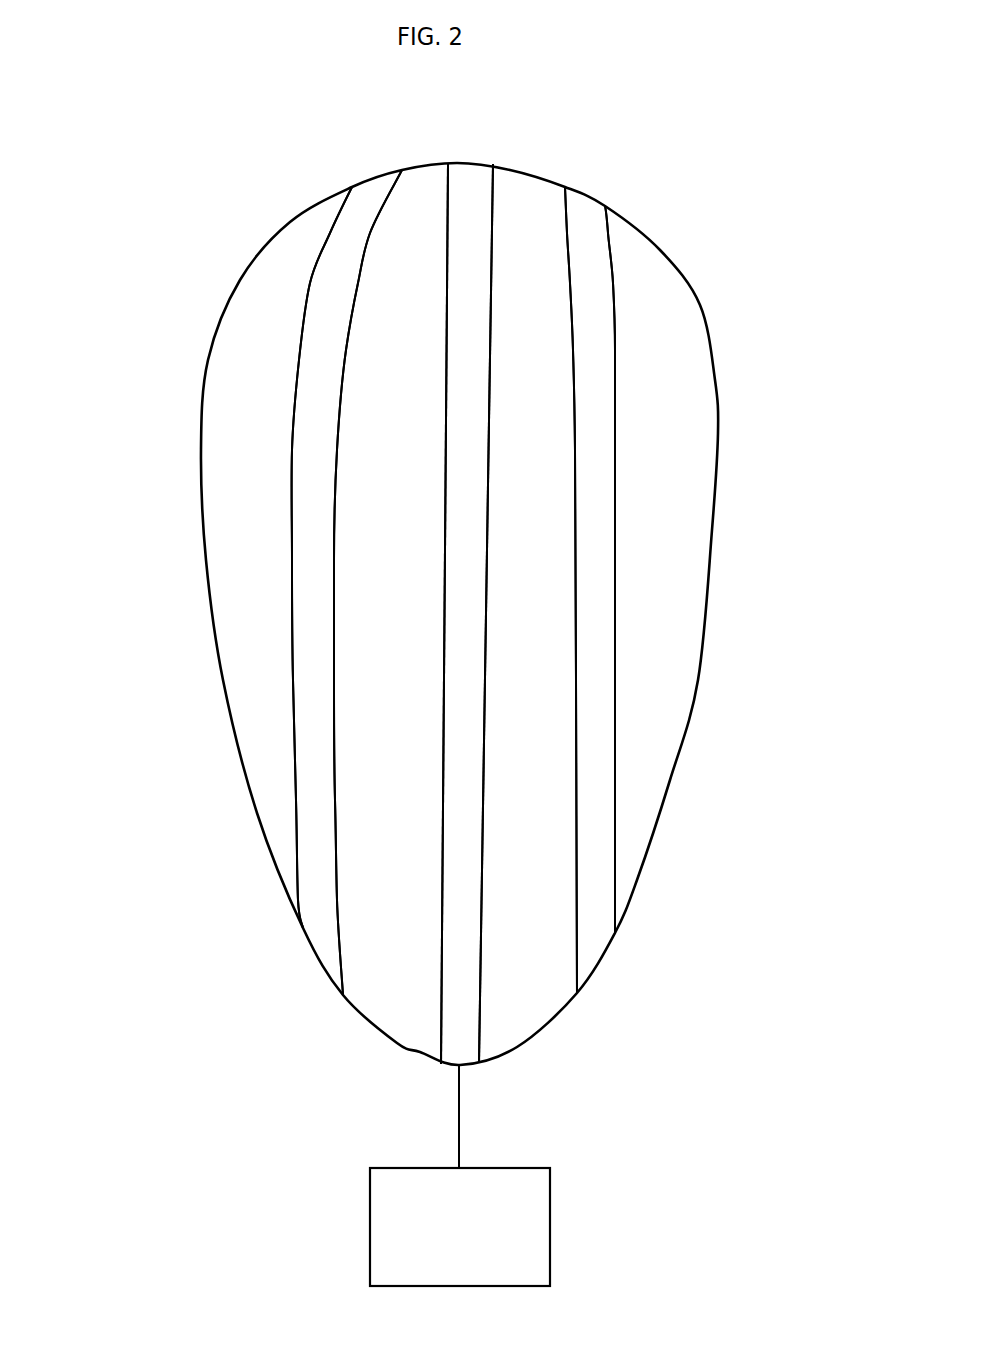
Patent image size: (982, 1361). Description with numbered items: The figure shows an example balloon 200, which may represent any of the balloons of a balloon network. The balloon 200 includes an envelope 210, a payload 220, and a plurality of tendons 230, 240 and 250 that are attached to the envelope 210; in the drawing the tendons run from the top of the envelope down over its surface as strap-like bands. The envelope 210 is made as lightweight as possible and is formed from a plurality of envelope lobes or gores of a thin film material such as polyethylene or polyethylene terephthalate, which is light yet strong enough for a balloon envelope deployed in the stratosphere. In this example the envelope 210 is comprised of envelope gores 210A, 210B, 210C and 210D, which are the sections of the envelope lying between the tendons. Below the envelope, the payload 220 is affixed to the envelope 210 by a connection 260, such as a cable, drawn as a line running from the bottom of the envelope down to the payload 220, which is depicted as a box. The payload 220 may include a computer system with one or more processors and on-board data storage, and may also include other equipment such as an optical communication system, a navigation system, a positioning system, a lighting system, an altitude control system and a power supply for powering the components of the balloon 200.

The balloon 200 is at (812, 48).
The envelope 210 is at (710, 338).
The envelope gore 210A is at (252, 658).
The envelope gore 210B is at (365, 827).
The envelope gore 210C is at (514, 916).
The envelope gore 210D is at (671, 634).
The payload 220 is at (369, 1220).
The tendon 230 is at (365, 182).
The tendon 240 is at (467, 162).
The tendon 250 is at (587, 192).
The connection 260 is at (461, 1130).